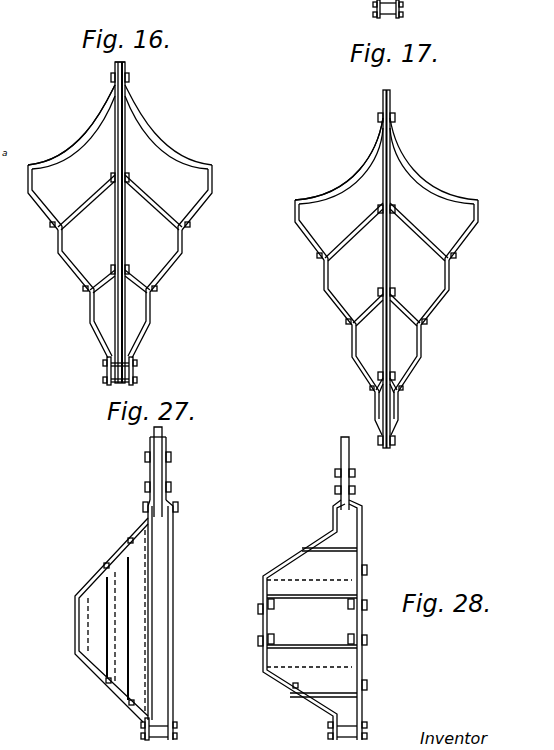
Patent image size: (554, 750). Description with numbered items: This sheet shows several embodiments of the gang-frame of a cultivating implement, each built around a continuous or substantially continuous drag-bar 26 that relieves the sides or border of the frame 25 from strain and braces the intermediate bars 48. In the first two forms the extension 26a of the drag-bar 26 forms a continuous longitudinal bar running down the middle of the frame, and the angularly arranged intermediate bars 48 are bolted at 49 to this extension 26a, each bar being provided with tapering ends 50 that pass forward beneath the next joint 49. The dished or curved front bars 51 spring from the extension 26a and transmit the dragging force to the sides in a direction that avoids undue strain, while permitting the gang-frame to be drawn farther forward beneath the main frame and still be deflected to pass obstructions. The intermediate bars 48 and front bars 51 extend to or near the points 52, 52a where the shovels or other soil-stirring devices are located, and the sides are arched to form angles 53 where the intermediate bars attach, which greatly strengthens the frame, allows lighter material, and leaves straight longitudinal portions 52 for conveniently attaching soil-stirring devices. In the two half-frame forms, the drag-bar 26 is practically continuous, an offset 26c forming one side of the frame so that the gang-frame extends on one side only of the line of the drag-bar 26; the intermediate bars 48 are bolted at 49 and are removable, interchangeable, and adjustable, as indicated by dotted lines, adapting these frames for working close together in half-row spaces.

In FIG. 16, the shell plate 25 is at (120, 127).
In FIG. 17, the shell plate 25 is at (386, 161).
In FIG. 27, the shell plate 25 is at (140, 620).
In FIG. 28, the shell plate 25 is at (328, 622).
In FIG. 16, the drag-bar 26 is at (128, 98).
In FIG. 17, the drag-bar 26 is at (393, 141).
In FIG. 16, the extension of the drag-bar 26a is at (128, 62).
In FIG. 17, the extension of the drag-bar 26a is at (391, 96).
In FIG. 27, the extension of the drag-bar 26a is at (165, 468).
In FIG. 28, the extension of the drag-bar 26a is at (348, 455).
In FIG. 27, the offset of the drag-bar 26c is at (174, 552).
In FIG. 28, the offset of the drag-bar 26c is at (363, 518).
In FIG. 16, the intermediate bars 48 is at (91, 200).
In FIG. 17, the intermediate bars 48 is at (413, 234).
In FIG. 28, the intermediate bars 48 is at (317, 600).
In FIG. 16, the bolts 49 is at (128, 171).
In FIG. 17, the bolts 49 is at (380, 208).
In FIG. 28, the bolts 49 is at (355, 607).
In FIG. 16, the tapering ends 50 is at (121, 204).
In FIG. 16, the front bars 51 is at (87, 145).
In FIG. 17, the front bars 51 is at (344, 182).
In FIG. 16, the straight longitudinal portions 52 is at (28, 183).
In FIG. 17, the straight longitudinal portions 52 is at (294, 210).
In FIG. 16, the points where shovels are located 52a is at (214, 173).
In FIG. 17, the points where shovels are located 52a is at (479, 204).
In FIG. 16, the angles in the sides 53 is at (70, 275).
In FIG. 17, the angles in the sides 53 is at (327, 305).